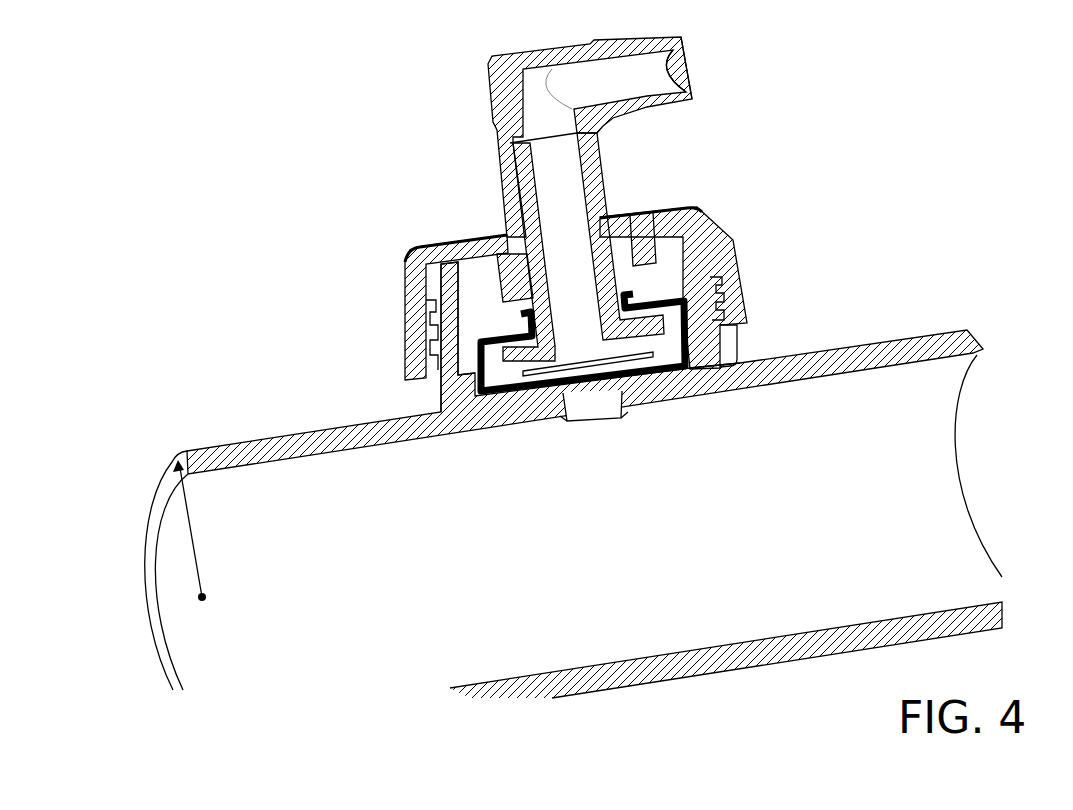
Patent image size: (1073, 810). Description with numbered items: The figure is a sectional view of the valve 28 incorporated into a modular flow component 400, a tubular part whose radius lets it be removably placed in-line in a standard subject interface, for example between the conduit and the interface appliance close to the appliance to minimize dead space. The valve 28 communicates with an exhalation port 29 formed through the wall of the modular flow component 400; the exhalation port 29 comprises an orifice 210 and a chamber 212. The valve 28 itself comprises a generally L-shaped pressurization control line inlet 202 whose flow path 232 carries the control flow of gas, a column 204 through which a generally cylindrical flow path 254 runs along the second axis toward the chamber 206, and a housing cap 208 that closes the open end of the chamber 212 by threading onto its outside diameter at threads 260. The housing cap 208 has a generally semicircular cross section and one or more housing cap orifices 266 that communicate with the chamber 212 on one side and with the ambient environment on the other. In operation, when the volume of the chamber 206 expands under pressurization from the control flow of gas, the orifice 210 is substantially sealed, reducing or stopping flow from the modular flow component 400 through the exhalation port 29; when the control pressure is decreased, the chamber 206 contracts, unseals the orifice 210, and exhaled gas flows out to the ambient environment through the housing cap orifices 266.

The valve 28 is at (540, 224).
The exhalation port 29 is at (609, 418).
The pressurization control line inlet 202 is at (580, 137).
The column 204 is at (597, 215).
The chamber 206 is at (702, 346).
The housing cap 208 is at (740, 219).
The orifice 210 is at (583, 415).
The chamber 212 is at (472, 301).
The flow path 232 is at (683, 76).
The flow path 254 is at (567, 167).
The threads 260 is at (735, 298).
The housing cap orifices 266 is at (458, 239).
The modular flow component 400 is at (305, 500).